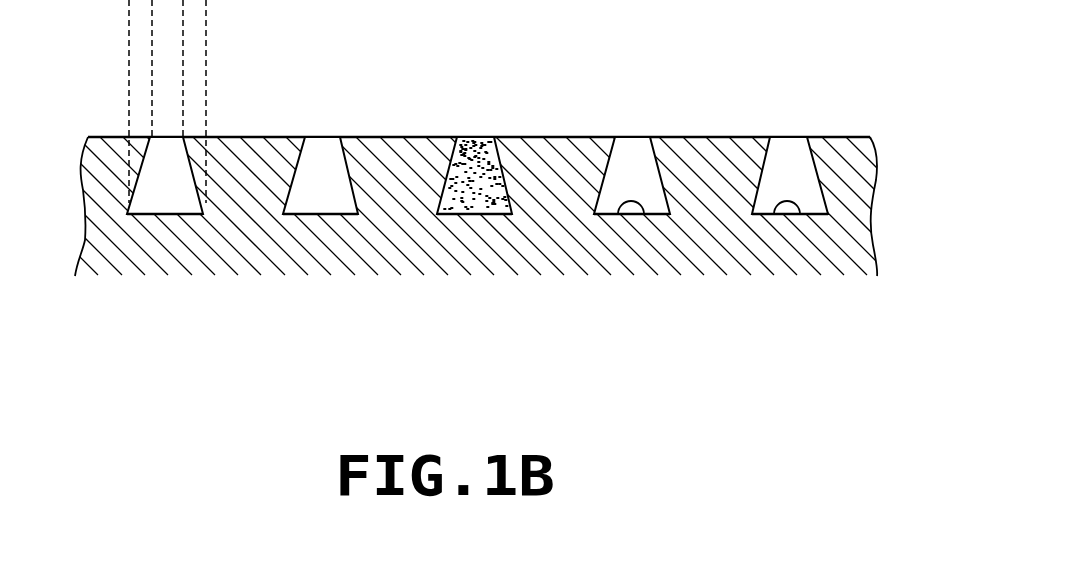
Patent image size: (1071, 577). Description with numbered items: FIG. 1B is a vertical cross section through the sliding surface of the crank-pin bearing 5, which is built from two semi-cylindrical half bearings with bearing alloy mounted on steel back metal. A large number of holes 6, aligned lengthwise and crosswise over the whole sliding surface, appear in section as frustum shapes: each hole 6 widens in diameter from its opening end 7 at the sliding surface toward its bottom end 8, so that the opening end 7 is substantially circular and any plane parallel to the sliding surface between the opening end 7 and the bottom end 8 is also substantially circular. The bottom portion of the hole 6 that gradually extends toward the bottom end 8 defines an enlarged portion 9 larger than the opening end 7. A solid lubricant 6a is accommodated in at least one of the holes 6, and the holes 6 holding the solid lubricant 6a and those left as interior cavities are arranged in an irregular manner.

The crank-pin bearing 5 is at (252, 255).
The hole 6 is at (637, 88).
The solid lubricant 6a is at (478, 146).
The opening end 7 is at (323, 137).
The bottom end 8 is at (617, 216).
The enlarged portion 9 is at (170, 205).